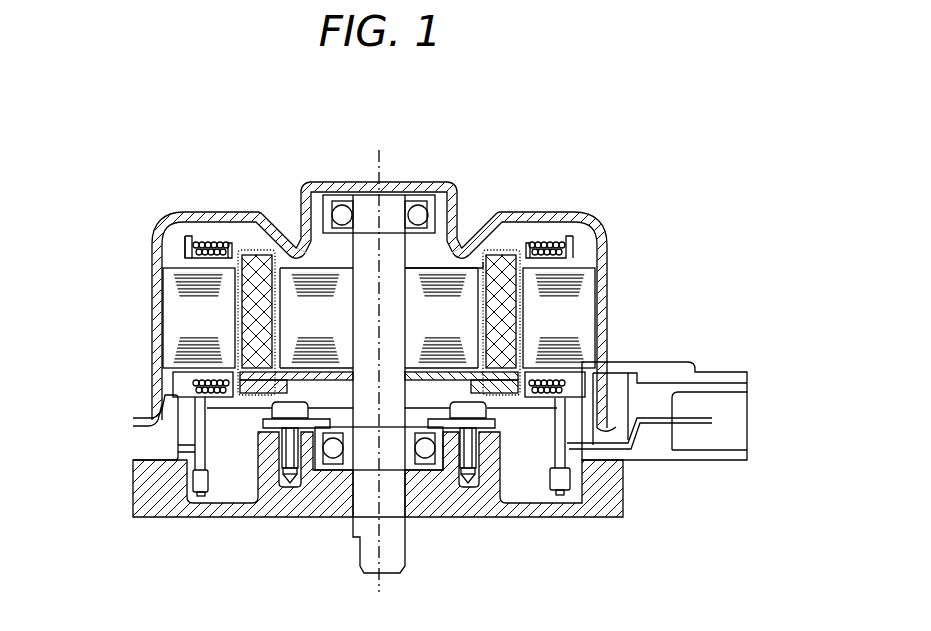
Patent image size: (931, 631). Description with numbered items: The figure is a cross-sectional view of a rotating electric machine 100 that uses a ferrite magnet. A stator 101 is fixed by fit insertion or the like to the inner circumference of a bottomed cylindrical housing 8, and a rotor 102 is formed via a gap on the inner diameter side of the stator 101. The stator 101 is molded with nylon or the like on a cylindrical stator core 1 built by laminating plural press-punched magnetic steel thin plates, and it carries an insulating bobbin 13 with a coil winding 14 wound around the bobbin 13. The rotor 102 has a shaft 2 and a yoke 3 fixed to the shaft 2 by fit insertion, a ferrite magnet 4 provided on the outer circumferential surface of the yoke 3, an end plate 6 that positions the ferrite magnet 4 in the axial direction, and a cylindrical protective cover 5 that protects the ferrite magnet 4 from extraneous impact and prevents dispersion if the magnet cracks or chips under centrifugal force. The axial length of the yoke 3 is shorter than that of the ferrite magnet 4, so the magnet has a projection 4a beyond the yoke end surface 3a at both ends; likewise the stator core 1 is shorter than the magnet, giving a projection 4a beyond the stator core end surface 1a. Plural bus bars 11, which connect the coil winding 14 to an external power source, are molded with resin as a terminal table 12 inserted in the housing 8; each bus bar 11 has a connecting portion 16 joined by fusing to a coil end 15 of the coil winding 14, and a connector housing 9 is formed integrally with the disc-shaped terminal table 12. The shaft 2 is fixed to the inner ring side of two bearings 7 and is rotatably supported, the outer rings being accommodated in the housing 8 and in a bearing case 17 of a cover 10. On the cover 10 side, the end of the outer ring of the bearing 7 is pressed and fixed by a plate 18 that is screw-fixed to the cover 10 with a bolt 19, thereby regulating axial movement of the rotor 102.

The stator core 1 is at (603, 292).
The stator core end surface 1a is at (603, 255).
The shaft 2 is at (396, 575).
The yoke 3 is at (412, 287).
The yoke end surface 3a is at (443, 275).
The ferrite magnet 4 is at (580, 313).
The projection 4a is at (510, 280).
The protective cover 5 is at (505, 300).
The end plate 6 is at (603, 335).
The bearing 7 is at (343, 212).
The housing 8 is at (222, 213).
The connector housing 9 is at (655, 456).
The cover 10 is at (598, 497).
The bus bar 11 is at (192, 461).
The terminal table 12 is at (165, 450).
The bobbin 13 is at (183, 260).
The coil winding 14 is at (198, 247).
The coil end 15 is at (450, 472).
The connecting portion 16 is at (197, 488).
The bearing case 17 is at (320, 213).
The plate 18 is at (270, 425).
The bolt 19 is at (210, 358).
The rotating electric machine 100 is at (405, 181).
The stator 101 is at (197, 312).
The rotor 102 is at (312, 322).